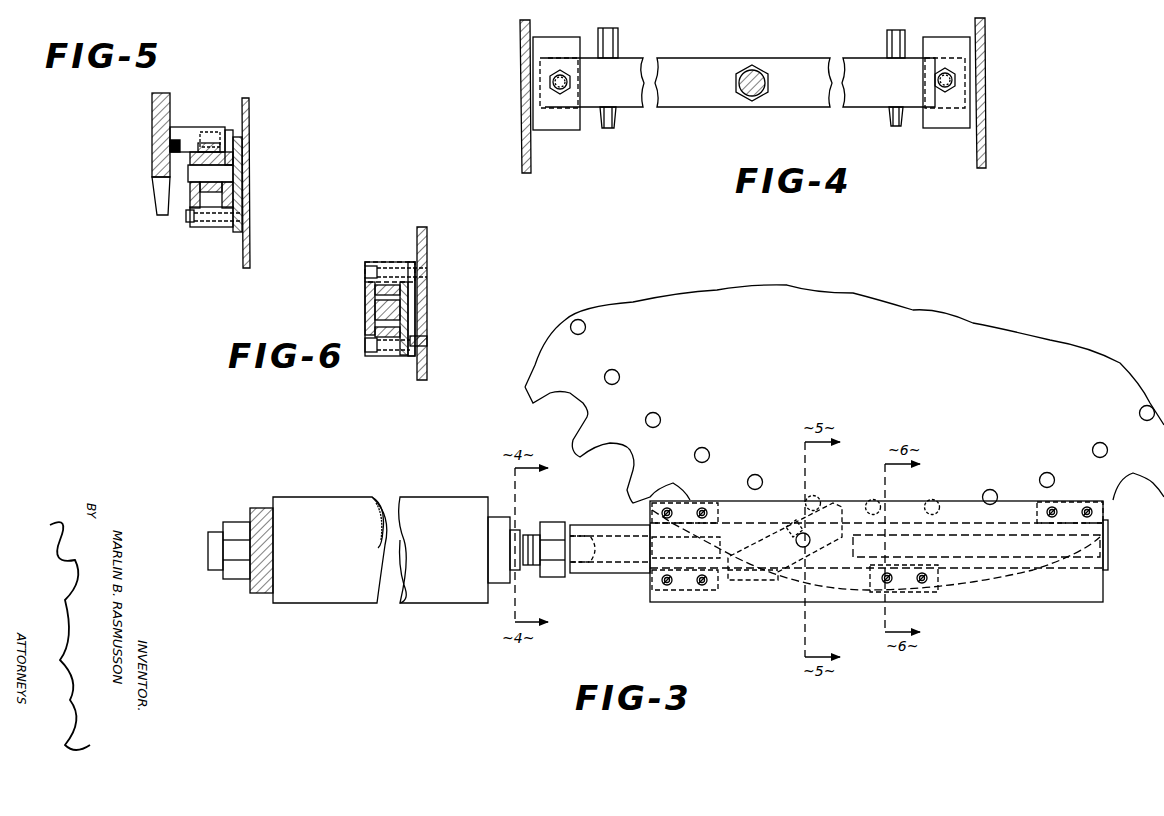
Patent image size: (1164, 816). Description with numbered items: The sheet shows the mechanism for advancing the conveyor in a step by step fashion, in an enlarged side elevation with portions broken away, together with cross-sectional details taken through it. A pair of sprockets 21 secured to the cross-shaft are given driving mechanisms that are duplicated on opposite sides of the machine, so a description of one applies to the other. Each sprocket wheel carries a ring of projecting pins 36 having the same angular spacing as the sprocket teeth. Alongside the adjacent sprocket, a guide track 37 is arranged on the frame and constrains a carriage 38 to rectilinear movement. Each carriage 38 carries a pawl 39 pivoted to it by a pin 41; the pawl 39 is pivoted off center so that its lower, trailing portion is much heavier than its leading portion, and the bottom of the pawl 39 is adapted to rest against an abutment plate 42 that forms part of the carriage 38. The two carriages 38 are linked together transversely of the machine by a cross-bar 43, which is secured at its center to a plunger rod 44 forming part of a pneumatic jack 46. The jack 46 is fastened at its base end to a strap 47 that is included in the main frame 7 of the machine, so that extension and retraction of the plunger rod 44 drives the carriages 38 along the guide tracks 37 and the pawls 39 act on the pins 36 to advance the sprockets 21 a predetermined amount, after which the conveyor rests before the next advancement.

In FIG. 4, the main frame 7 is at (520, 45).
In FIG. 5, the main frame 7 is at (252, 256).
In FIG. 3, the sprockets 21 is at (856, 341).
In FIG. 4, the sprockets 21 is at (615, 35).
In FIG. 5, the sprockets 21 is at (150, 103).
In FIG. 3, the projecting pins 36 is at (612, 369).
In FIG. 5, the projecting pins 36 is at (188, 127).
In FIG. 3, the guide track 37 is at (720, 501).
In FIG. 5, the guide track 37 is at (214, 228).
In FIG. 6, the guide track 37 is at (398, 278).
In FIG. 3, the carriage 38 is at (953, 517).
In FIG. 4, the carriage 38 is at (540, 72).
In FIG. 5, the carriage 38 is at (228, 192).
In FIG. 6, the carriage 38 is at (366, 307).
In FIG. 3, the pawl 39 is at (830, 500).
In FIG. 5, the pawl 39 is at (208, 145).
In FIG. 3, the pin 41 is at (811, 547).
In FIG. 5, the pin 41 is at (228, 173).
In FIG. 3, the abutment plate 42 is at (757, 578).
In FIG. 3, the cross-bar 43 is at (551, 573).
In FIG. 4, the cross-bar 43 is at (810, 60).
In FIG. 3, the plunger rod 44 is at (524, 533).
In FIG. 4, the plunger rod 44 is at (752, 66).
In FIG. 3, the pneumatic jack 46 is at (335, 600).
In FIG. 3, the strap 47 is at (268, 595).